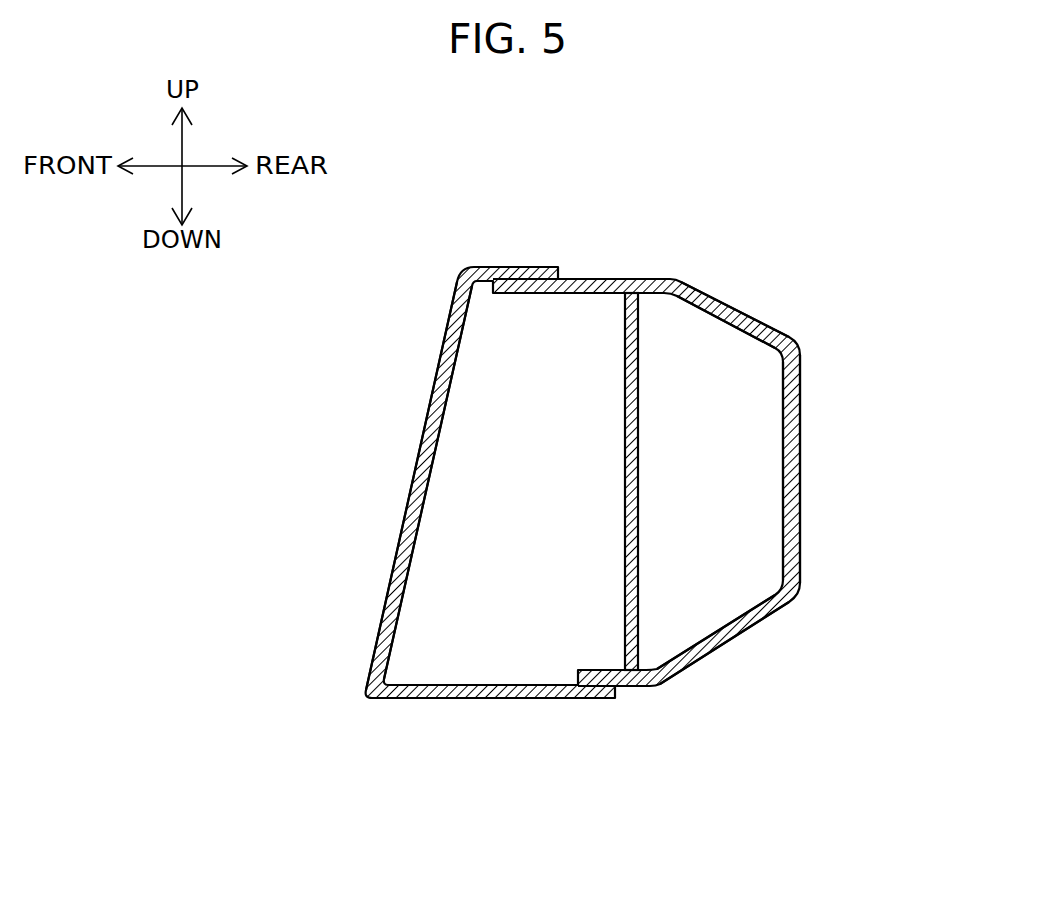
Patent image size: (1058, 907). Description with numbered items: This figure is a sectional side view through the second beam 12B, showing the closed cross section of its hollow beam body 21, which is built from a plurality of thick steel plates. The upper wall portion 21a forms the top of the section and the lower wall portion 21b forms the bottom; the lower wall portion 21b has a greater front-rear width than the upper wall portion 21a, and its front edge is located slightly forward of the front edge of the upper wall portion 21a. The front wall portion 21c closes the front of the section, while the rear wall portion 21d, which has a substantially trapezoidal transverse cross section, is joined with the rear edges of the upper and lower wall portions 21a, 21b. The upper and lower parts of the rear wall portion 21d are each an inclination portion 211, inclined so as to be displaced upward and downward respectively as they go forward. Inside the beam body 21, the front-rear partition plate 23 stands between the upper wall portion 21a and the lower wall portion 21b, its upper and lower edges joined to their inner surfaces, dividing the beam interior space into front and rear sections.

The second beam 12B is at (772, 218).
The beam body 21 is at (812, 336).
The upper wall portion 21a is at (594, 279).
The lower wall portion 21b is at (533, 698).
The front wall portion 21c is at (418, 461).
The rear wall portion 21d is at (802, 458).
The inclination portion 211 is at (730, 303).
The front-rear partition plate 23 is at (625, 468).